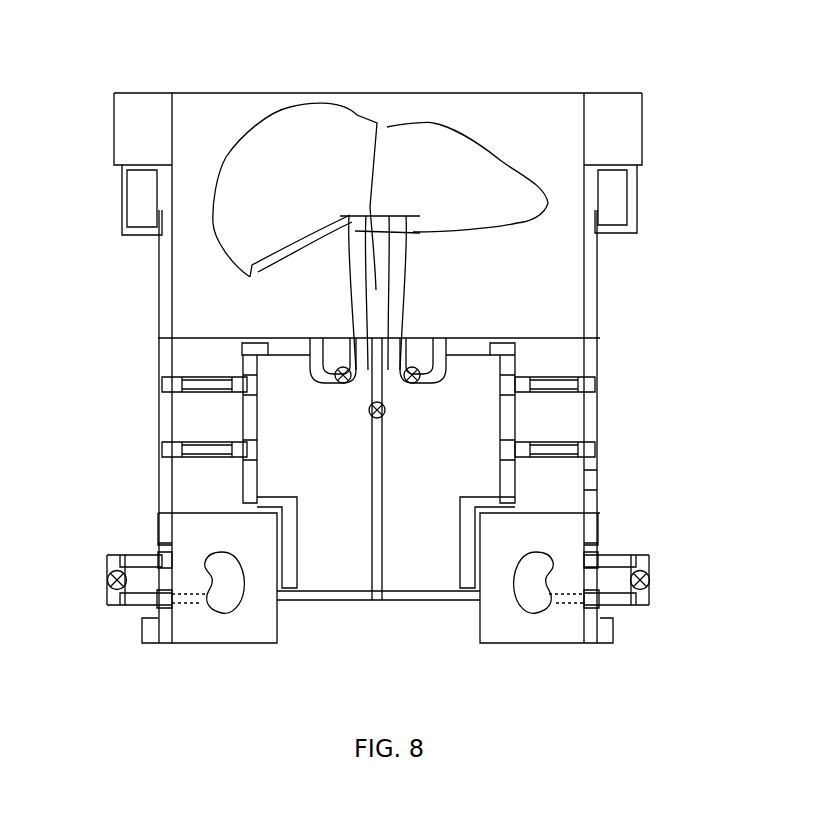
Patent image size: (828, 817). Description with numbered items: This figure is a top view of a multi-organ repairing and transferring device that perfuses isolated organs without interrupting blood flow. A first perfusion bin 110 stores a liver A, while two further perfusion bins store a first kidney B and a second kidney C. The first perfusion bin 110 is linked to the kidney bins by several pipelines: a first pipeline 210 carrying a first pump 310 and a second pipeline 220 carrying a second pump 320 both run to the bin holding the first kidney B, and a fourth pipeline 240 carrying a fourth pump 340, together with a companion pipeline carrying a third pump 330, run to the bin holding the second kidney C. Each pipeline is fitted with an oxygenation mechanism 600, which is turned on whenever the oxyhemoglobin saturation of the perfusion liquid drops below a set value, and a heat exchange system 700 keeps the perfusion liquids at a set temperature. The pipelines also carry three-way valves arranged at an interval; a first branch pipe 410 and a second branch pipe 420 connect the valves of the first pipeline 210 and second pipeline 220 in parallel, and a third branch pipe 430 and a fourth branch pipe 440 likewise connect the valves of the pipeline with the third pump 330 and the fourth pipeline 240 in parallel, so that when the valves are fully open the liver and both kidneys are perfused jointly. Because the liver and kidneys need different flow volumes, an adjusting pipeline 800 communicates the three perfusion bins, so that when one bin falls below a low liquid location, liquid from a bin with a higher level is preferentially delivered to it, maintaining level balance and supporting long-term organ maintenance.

The first perfusion bin 110 is at (455, 115).
The liver A is at (320, 143).
The first kidney B is at (213, 608).
The second kidney C is at (548, 608).
The first pipeline 210 is at (158, 352).
The second pipeline 220 is at (288, 547).
The fourth pipeline 240 is at (596, 486).
The first pump 310 is at (113, 587).
The second pump 320 is at (340, 387).
The third pump 330 is at (412, 387).
The fourth pump 340 is at (643, 606).
The first branch pipe 410 is at (158, 402).
The second branch pipe 420 is at (158, 468).
The third branch pipe 430 is at (580, 388).
The fourth branch pipe 440 is at (580, 457).
The oxygenation mechanism 600 is at (278, 340).
The heat exchange system 700 is at (135, 135).
The adjusting pipeline 800 is at (383, 487).